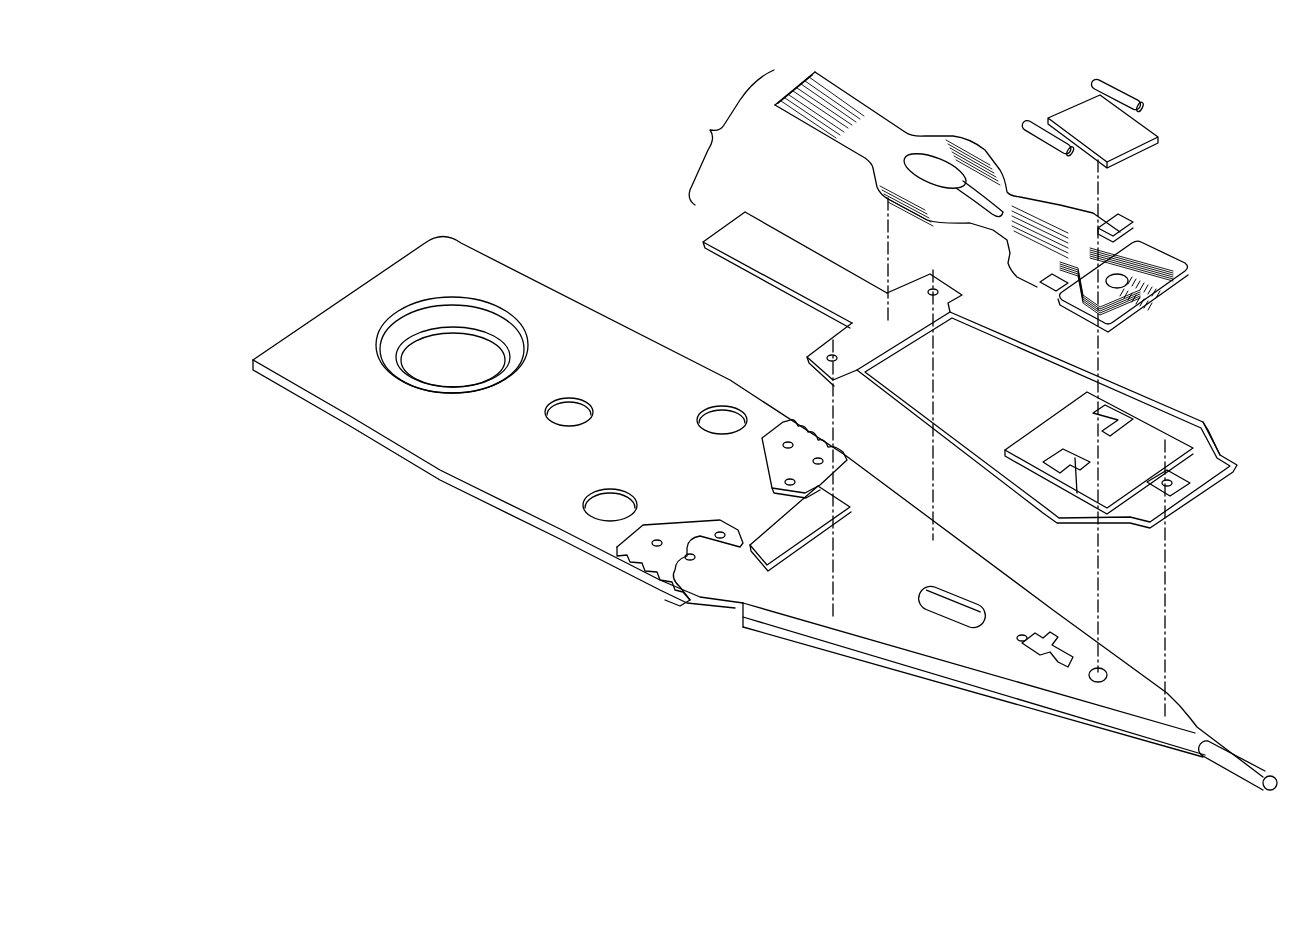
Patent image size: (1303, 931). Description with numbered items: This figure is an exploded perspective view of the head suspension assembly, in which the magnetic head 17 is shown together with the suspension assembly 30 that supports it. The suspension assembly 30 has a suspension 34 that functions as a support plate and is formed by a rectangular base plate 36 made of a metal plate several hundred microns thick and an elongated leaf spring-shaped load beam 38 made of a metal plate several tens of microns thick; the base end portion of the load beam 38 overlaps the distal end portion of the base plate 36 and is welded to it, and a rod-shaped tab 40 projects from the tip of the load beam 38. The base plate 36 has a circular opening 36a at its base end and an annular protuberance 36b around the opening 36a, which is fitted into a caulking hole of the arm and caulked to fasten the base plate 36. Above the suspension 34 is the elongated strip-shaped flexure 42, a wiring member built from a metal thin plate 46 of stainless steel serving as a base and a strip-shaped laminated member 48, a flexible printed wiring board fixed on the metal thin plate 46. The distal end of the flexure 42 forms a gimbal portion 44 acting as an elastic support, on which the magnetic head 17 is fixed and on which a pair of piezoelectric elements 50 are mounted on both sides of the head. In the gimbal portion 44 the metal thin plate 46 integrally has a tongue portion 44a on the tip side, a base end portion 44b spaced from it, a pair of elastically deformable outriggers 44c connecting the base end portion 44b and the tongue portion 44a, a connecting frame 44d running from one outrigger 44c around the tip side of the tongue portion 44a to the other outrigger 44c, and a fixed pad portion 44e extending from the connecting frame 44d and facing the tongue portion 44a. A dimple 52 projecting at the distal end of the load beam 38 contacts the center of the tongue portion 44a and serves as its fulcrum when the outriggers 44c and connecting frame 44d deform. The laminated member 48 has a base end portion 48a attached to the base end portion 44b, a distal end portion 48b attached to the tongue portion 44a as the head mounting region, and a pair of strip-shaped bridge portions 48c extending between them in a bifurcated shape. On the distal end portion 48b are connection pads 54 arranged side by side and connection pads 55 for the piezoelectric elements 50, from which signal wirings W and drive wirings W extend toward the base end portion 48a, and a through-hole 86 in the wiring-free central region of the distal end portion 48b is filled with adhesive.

The magnetic head 17 is at (1073, 115).
The suspension assembly 30 is at (635, 208).
The suspension 34 is at (600, 580).
The base plate 36 is at (476, 453).
The circular opening 36a is at (478, 345).
The annular protuberance 36b is at (412, 332).
The load beam 38 is at (900, 636).
The tab 40 is at (1245, 764).
The flexure 42 is at (956, 204).
The gimbal portion 44 is at (1212, 314).
The tongue portion 44a is at (1165, 440).
The base end portion 44b is at (893, 340).
The outriggers 44c is at (1030, 352).
The connecting frame 44d is at (1225, 434).
The fixed pad portion 44e is at (1182, 490).
The metal thin plate 46 is at (765, 245).
The laminated member 48 is at (882, 130).
The base end portion 48a is at (828, 112).
The distal end portion 48b is at (1150, 248).
The bridge portions 48c is at (945, 208).
The piezoelectric elements 50 is at (1030, 132).
The dimple 52 is at (1098, 684).
The connection pads 54 is at (1152, 293).
The connection pads 55 is at (1128, 235).
The through-hole 86 is at (1117, 290).
The wirings W is at (830, 98).